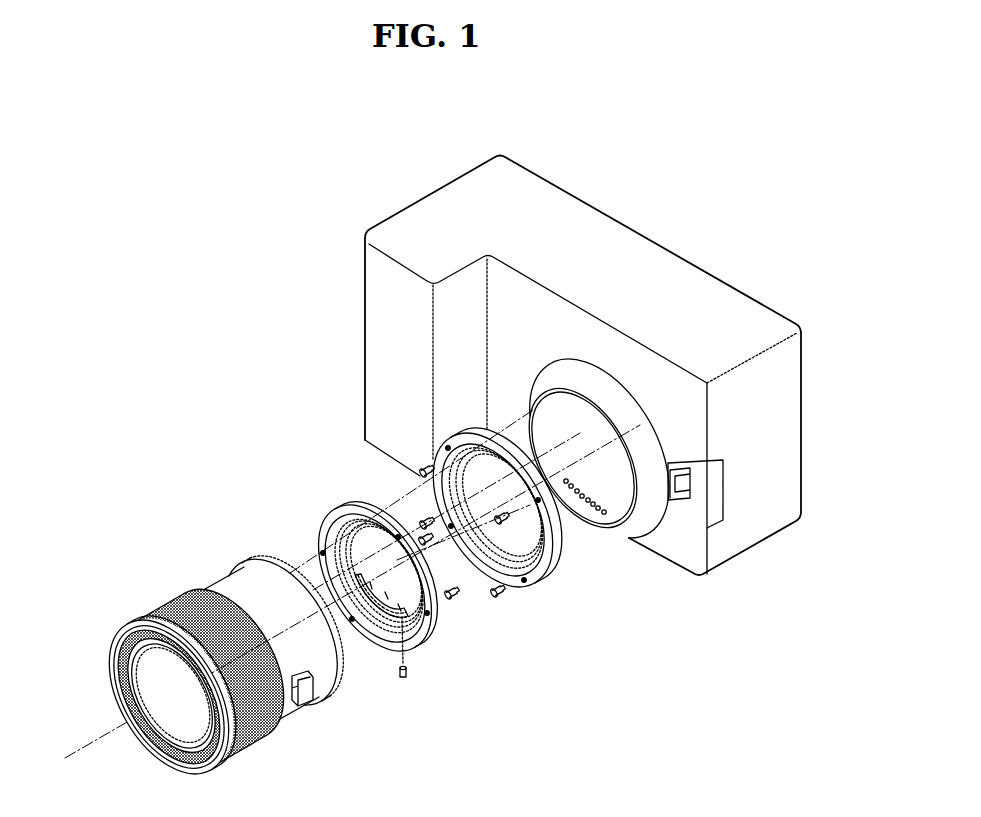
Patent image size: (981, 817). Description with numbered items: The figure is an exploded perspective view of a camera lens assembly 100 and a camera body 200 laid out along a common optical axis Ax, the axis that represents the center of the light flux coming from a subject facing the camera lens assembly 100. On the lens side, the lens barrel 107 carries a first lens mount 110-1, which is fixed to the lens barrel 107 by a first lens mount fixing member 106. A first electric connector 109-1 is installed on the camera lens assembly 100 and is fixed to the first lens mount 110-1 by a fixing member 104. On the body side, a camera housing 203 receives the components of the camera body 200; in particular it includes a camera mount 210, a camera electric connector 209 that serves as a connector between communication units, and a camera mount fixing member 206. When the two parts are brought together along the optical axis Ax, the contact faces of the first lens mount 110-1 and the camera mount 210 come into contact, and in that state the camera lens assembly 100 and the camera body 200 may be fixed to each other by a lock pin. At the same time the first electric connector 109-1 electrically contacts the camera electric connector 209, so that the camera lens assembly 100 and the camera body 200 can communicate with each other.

The camera lens assembly 100 is at (299, 610).
The fixing member 104 is at (409, 661).
The first lens mount fixing member 106 is at (452, 597).
The lens barrel 107 is at (222, 577).
The first electric connector 109-1 is at (425, 638).
The first lens mount 110-1 is at (372, 589).
The camera body 200 is at (583, 393).
The camera housing 203 is at (725, 318).
The camera mount fixing member 206 is at (499, 596).
The camera electric connector 209 is at (595, 528).
The camera mount 210 is at (532, 580).
The optical axis Ax is at (341, 594).